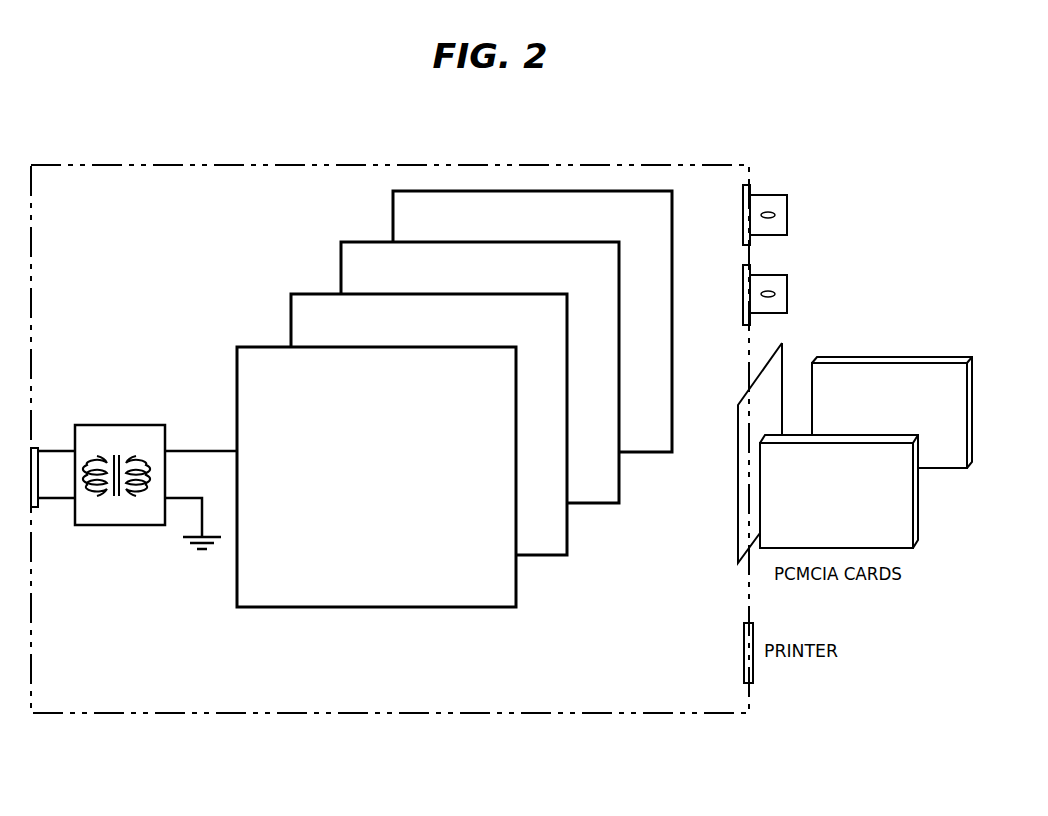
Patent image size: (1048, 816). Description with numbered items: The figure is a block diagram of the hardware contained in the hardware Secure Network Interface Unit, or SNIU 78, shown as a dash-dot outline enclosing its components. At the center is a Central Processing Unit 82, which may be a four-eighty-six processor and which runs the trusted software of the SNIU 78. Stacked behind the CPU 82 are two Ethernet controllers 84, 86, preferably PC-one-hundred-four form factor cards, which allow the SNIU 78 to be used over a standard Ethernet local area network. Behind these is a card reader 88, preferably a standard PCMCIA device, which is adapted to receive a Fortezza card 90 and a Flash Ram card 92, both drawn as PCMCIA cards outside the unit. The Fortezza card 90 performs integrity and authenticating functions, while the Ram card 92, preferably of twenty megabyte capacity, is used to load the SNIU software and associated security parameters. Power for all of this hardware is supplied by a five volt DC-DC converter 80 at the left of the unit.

The SNIU 78 is at (113, 165).
The five volt DC-DC converter 80 is at (113, 425).
The Central Processing Unit 82 is at (516, 580).
The Ethernet controller 84 is at (567, 527).
The Ethernet controller 86 is at (619, 474).
The card reader 88 is at (672, 340).
The Fortezza card 90 is at (972, 437).
The Flash Ram card 92 is at (918, 523).